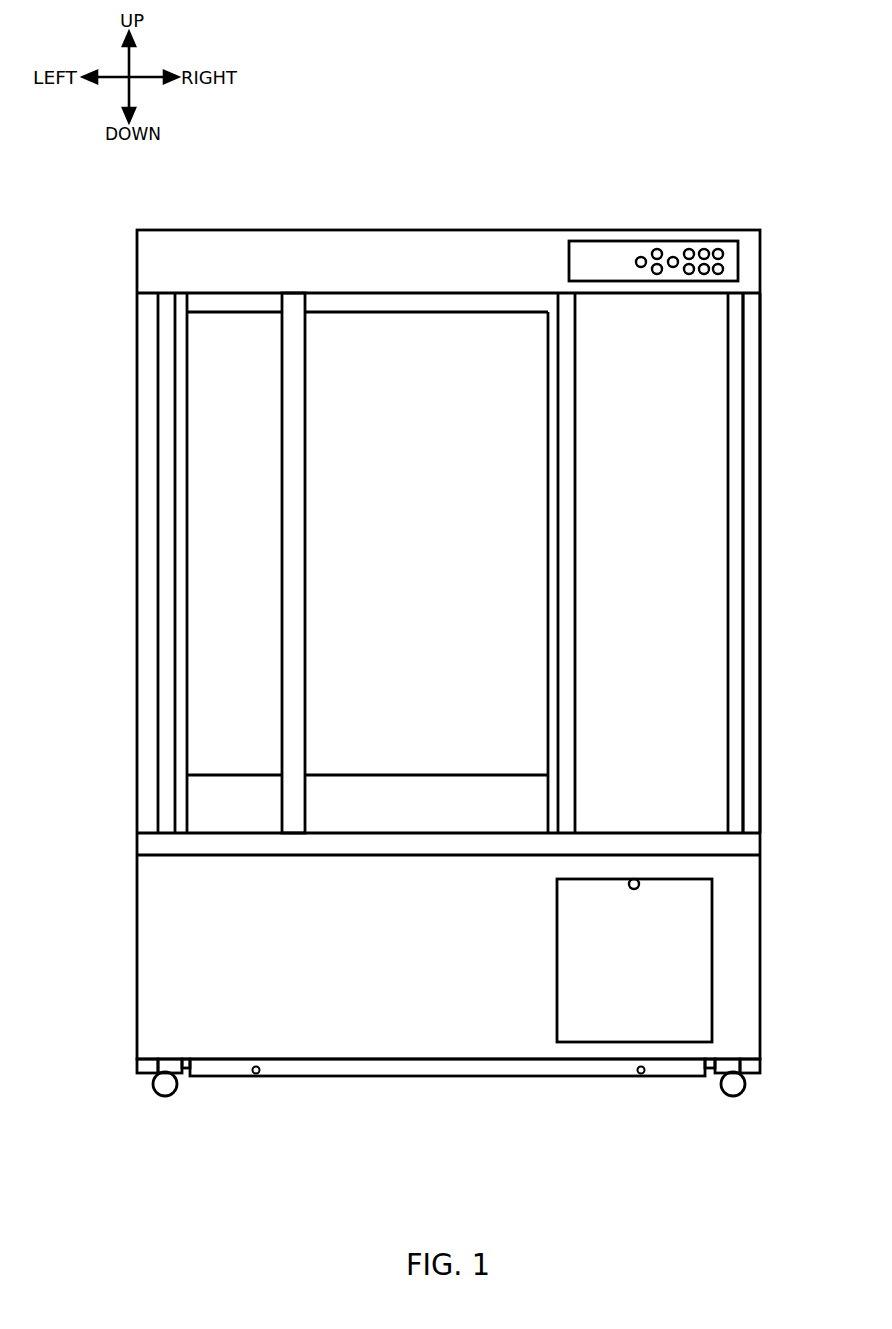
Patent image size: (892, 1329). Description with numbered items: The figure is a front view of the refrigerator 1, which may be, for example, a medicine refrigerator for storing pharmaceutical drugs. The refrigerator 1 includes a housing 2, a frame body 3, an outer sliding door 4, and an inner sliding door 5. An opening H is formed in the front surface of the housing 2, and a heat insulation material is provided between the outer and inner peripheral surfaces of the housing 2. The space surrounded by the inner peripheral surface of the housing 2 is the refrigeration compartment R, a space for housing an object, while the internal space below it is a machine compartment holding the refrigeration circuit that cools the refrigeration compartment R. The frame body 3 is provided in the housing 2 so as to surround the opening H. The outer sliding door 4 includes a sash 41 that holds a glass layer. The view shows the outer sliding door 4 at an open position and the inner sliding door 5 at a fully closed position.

The refrigerator 1 is at (722, 150).
The housing 2 is at (762, 402).
The frame body 3 is at (727, 402).
The outer sliding door 4 is at (426, 486).
The sash 41 is at (426, 357).
The inner sliding door 5 is at (260, 293).
The opening H is at (710, 537).
The refrigeration compartment R is at (628, 534).